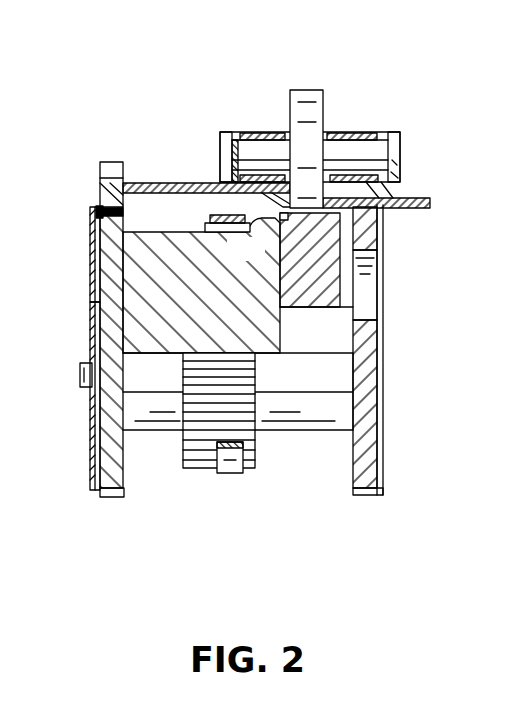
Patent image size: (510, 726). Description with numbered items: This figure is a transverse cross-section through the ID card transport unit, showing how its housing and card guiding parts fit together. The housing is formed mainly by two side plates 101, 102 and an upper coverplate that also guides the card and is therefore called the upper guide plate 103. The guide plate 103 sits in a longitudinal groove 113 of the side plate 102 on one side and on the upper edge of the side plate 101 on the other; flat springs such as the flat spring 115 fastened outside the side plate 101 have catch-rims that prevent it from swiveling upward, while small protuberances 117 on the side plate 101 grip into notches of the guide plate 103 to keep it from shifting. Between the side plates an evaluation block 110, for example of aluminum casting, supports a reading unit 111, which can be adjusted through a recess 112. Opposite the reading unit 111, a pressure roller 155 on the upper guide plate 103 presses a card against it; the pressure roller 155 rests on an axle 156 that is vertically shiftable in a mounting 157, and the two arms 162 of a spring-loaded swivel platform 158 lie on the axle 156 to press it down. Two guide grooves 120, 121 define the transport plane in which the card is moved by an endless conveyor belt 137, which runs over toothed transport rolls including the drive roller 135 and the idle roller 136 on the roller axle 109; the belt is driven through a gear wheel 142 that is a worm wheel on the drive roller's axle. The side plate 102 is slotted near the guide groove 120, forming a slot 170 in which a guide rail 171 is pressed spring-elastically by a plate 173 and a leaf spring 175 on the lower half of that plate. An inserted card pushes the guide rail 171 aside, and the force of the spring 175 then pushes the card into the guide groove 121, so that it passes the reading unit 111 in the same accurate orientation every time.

The side plate 101 is at (358, 457).
The side plate 102 is at (122, 472).
The upper guide plate 103 is at (152, 183).
The roller axle 109 is at (298, 431).
The evaluation block 110 is at (288, 355).
The reading unit 111 is at (313, 303).
The recess 112 is at (370, 291).
The longitudinal groove 113 is at (100, 181).
The flat spring 115 is at (380, 328).
The protuberance 117 is at (395, 198).
The guide groove 120 is at (112, 212).
The guide groove 121 is at (366, 215).
The transport roll 135 is at (208, 228).
The transport roll 136 is at (183, 447).
The endless conveyor belt 137 is at (232, 462).
The gear wheel 142 is at (201, 285).
The pressure roller 155 is at (309, 93).
The axle 156 is at (370, 148).
The mounting 157 is at (234, 163).
The swivel platform 158 is at (221, 135).
The arms 162 is at (258, 133).
The slot 170 is at (103, 203).
The guide rail 171 is at (92, 217).
The plate 173 is at (91, 300).
The leaf spring 175 is at (80, 375).